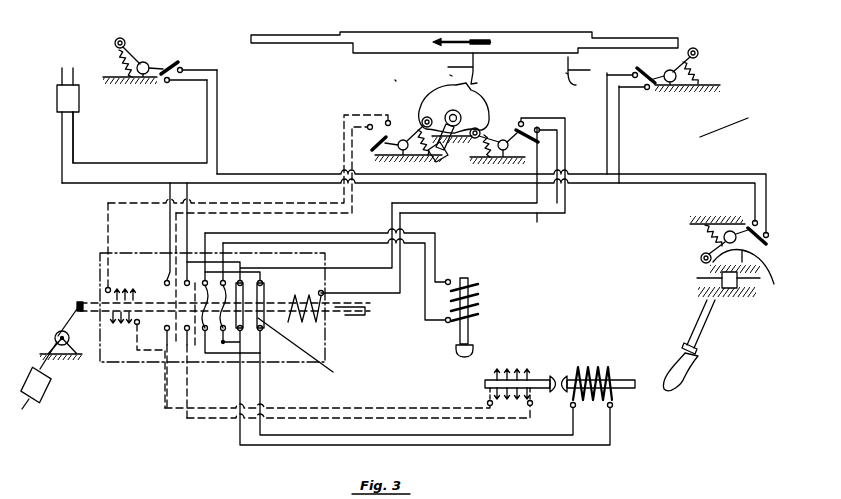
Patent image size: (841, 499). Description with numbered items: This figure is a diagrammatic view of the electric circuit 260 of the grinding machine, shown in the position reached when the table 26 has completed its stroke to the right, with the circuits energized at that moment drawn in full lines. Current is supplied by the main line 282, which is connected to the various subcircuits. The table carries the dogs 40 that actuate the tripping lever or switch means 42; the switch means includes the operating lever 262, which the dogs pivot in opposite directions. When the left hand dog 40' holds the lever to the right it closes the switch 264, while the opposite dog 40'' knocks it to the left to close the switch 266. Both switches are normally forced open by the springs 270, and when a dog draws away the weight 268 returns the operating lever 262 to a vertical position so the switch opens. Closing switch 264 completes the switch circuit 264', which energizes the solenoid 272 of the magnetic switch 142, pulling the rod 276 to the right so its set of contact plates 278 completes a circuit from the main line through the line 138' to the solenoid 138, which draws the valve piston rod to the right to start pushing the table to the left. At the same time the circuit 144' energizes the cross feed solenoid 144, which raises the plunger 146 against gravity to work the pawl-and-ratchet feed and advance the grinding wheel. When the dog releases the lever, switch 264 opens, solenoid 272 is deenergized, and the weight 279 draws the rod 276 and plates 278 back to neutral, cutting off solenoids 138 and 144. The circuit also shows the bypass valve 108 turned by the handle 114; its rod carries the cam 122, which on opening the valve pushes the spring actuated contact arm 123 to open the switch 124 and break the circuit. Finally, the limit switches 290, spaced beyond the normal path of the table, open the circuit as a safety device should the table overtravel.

The grinding wheel table 26 is at (383, 30).
The limit switches 290 is at (177, 62).
The main line 282 is at (66, 155).
The tripping lever 42 is at (395, 80).
The left hand dog 40' is at (437, 68).
The dogs 40 is at (509, 65).
The right hand dog 40'' is at (585, 81).
The operating lever 262 is at (472, 90).
The weight 268 is at (455, 152).
The springs 270 is at (420, 130).
The switch 266 is at (372, 148).
The switch 264 is at (478, 157).
The switch circuit 264' is at (558, 230).
The electric circuit 260 is at (737, 121).
The solenoid circuit 144' is at (341, 269).
The cross feed solenoid 144 is at (479, 301).
The plunger 146 is at (470, 336).
The magnetic switch 142 is at (138, 363).
The rod 276 is at (350, 318).
The solenoid 272 is at (310, 327).
The contact plates 278 is at (309, 352).
The solenoid circuit line 138' is at (425, 399).
The solenoid 138 is at (400, 380).
The weight 279 is at (47, 385).
The contact arm 123 is at (767, 228).
The switch 124 is at (767, 245).
The cam 122 is at (772, 283).
The bypass valve 108 is at (738, 298).
The handle 114 is at (689, 370).